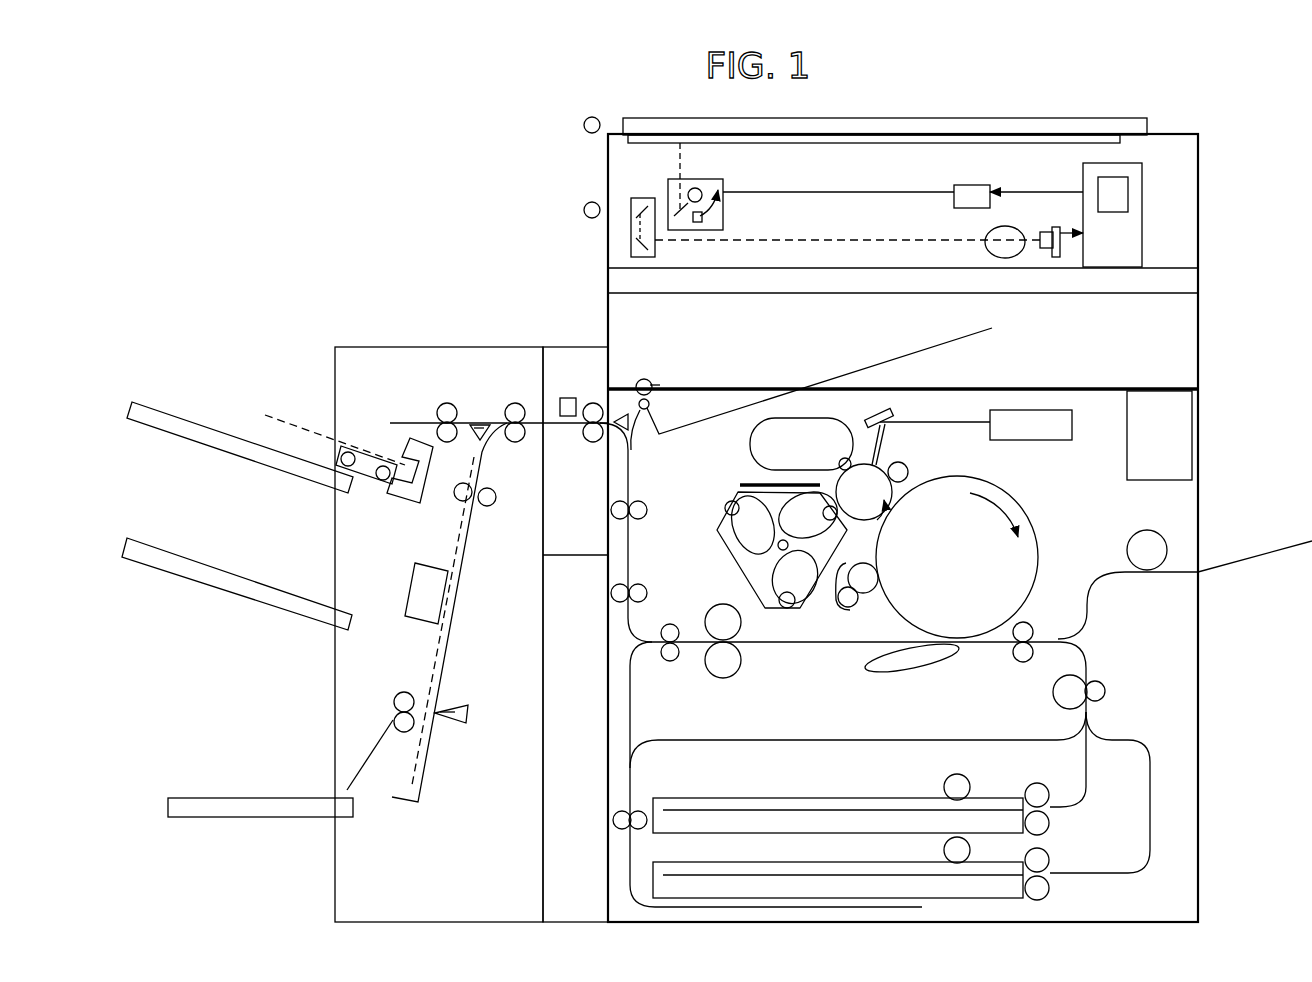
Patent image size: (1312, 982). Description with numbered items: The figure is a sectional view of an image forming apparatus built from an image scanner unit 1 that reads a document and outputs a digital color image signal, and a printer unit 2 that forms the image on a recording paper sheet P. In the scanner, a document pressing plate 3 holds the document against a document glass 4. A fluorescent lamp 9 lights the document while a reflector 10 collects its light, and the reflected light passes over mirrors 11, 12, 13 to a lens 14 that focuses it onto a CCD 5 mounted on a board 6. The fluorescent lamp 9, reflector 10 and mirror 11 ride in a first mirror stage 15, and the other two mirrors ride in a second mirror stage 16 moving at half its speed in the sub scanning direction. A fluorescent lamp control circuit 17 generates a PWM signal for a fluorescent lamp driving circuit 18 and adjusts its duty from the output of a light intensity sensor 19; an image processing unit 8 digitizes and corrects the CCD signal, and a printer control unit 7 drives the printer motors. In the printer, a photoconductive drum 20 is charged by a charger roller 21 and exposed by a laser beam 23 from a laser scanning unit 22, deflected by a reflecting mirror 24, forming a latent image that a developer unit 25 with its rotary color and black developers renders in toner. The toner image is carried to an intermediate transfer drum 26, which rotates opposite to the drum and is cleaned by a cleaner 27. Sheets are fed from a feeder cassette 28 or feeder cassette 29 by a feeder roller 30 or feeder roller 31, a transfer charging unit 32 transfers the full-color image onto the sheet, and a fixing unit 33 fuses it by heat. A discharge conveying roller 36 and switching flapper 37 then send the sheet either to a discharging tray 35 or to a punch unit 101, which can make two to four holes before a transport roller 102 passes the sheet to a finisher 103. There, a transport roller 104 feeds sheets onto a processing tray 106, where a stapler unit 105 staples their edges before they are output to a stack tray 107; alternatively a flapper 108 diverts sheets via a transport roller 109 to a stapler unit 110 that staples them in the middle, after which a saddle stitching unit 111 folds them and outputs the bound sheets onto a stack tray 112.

The image scanner unit 1 is at (1200, 142).
The printer unit 2 is at (1190, 905).
The document pressing plate 3 is at (862, 118).
The document glass 4 is at (917, 143).
The charge-coupled device (CCD) 5 is at (1046, 249).
The board 6 is at (1057, 258).
The printer control unit 7 is at (1175, 420).
The image processing unit 8 is at (1137, 251).
The fluorescent lamp 9 is at (688, 192).
The reflector 10 is at (720, 208).
The mirror 11 is at (677, 218).
The mirror 12 is at (645, 205).
The mirror 13 is at (633, 250).
The lens 14 is at (1000, 256).
The carriage (first mirror stage) 15 is at (716, 230).
The carriage (second mirror stage) 16 is at (631, 235).
The fluorescent lamp control circuit 17 is at (1128, 196).
The fluorescent lamp driving circuit 18 is at (972, 185).
The light intensity sensor 19 is at (698, 222).
The photoconductive drum 20 is at (870, 478).
The charger roller 21 is at (908, 466).
The laser scanning unit 22 is at (1046, 424).
The laser beam 23 is at (965, 424).
The reflecting mirror 24 is at (900, 413).
The developer unit 25 is at (745, 492).
The intermediate transfer drum 26 is at (1022, 560).
The cleaner 27 is at (841, 603).
The feeder cassette 28 is at (674, 804).
The feeder cassette 29 is at (677, 878).
The feeder roller 30 is at (960, 782).
The feeder roller 31 is at (962, 853).
The transfer charging unit 32 is at (907, 672).
The fixing unit 33 is at (718, 678).
The discharging tray 35 is at (870, 367).
The discharge conveying roller 36 is at (645, 585).
The switching flapper 37 is at (636, 440).
The punch unit 101 is at (580, 548).
The transport roller 102 is at (590, 442).
The finisher 103 is at (395, 350).
The transport roller 104 is at (503, 403).
The stapler unit 105 is at (405, 497).
The processing tray 106 is at (363, 462).
The stack tray 107 is at (185, 425).
The flapper 108 is at (500, 437).
The transport roller 109 is at (490, 507).
The stapler unit 110 is at (420, 612).
The saddle stitching unit 111 is at (455, 710).
The stack tray 112 is at (193, 805).
The recording paper sheet P is at (823, 808).